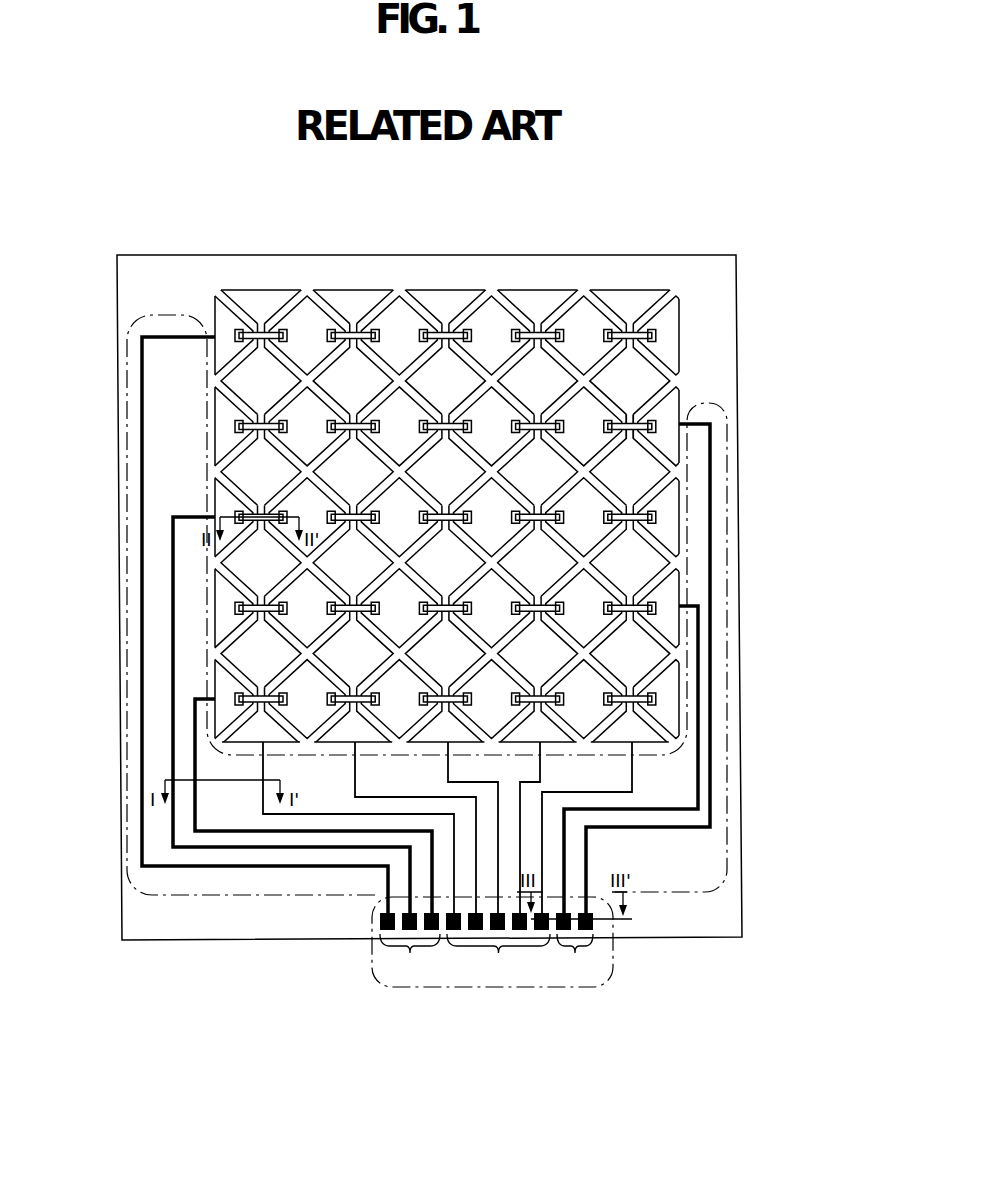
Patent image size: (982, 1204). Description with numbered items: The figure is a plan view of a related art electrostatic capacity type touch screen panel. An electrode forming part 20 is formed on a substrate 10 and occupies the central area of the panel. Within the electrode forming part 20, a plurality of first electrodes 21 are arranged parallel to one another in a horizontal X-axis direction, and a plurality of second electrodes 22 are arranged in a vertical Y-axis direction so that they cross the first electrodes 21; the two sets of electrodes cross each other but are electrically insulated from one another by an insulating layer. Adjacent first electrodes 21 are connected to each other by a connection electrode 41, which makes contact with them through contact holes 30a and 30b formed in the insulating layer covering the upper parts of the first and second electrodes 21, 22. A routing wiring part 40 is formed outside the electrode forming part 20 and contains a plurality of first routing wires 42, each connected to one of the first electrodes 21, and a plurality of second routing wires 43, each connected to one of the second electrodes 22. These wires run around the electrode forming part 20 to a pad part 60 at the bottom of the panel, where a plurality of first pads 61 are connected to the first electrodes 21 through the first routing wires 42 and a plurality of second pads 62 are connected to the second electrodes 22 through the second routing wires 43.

The substrate 10 is at (728, 912).
The electrode forming part 20 is at (490, 490).
The first electrodes 21 is at (668, 590).
The second electrodes 22 is at (652, 375).
The contact hole 30a is at (613, 405).
The contact hole 30b is at (657, 421).
The routing wiring part 40 is at (728, 842).
The connection electrode 41 is at (519, 453).
The first routing wires 42 is at (140, 375).
The second routing wires 43 is at (265, 766).
The pad part 60 is at (458, 990).
The first pads 61 is at (486, 950).
The second pads 62 is at (498, 950).